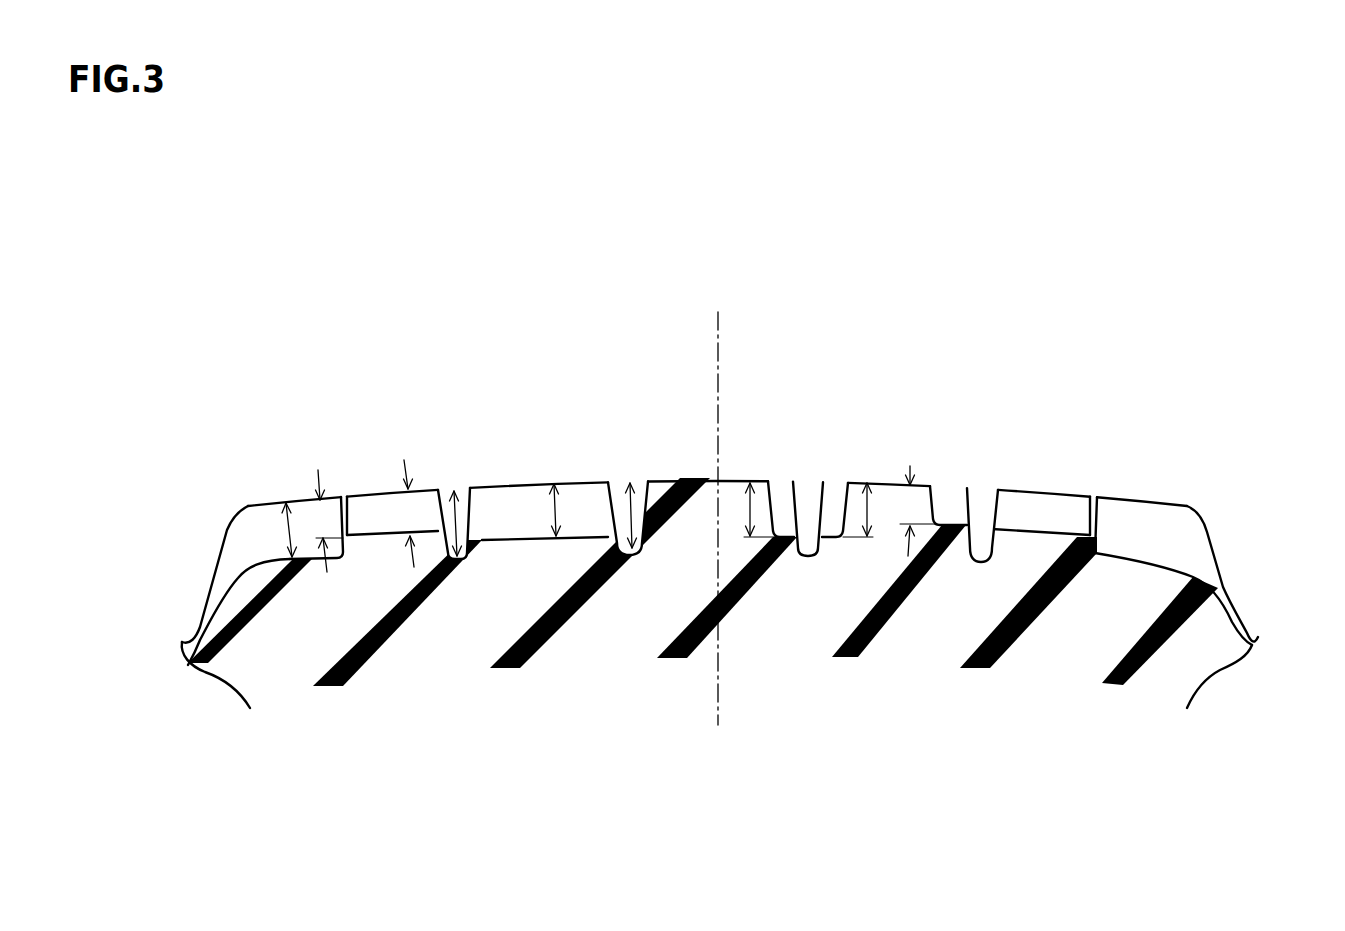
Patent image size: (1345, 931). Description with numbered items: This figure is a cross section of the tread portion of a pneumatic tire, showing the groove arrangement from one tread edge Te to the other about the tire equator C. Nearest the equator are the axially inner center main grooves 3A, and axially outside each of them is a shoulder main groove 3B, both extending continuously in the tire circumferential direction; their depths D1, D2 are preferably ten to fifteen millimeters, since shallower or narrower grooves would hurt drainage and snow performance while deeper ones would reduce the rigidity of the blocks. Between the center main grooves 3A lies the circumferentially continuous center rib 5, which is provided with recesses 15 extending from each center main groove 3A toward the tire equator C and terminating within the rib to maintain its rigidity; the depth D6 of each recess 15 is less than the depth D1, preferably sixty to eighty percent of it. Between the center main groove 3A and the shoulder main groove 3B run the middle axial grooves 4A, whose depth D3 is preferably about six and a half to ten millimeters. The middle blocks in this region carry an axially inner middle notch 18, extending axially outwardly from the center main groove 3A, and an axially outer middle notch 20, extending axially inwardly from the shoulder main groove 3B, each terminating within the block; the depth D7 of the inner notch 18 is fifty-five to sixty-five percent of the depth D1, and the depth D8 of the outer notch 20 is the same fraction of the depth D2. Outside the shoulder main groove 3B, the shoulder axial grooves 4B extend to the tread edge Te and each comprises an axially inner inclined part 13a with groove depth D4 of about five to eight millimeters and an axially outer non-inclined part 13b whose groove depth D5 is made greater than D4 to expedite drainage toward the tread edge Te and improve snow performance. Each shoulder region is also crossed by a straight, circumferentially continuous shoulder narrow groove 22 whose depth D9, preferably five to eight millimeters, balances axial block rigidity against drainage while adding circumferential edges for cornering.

The tread edge Te is at (247, 504).
The tire equator C is at (719, 502).
The shoulder narrow groove 22 is at (341, 497).
The middle axial groove 4A is at (503, 511).
The shoulder axial groove 4B is at (1125, 447).
The axially inner inclined part 13a is at (1038, 513).
The axially outer non-inclined part 13b is at (1153, 520).
The center rib 5 is at (679, 476).
The recess 15 is at (781, 492).
The center main groove 3A is at (808, 493).
The axially inner middle notch 18 is at (837, 497).
The axially outer middle notch 20 is at (948, 492).
The shoulder main groove 3B is at (977, 507).
The depth of center main groove D1 is at (629, 517).
The depth of shoulder main groove D2 is at (457, 505).
The depth of middle axial groove D3 is at (556, 510).
The groove depth of axially inner inclined part D4 is at (406, 508).
The groove depth of axially outer non-inclined part D5 is at (285, 525).
The depth of recess D6 is at (750, 505).
The depth of axially inner middle notch D7 is at (867, 507).
The depth of axially outer middle notch D8 is at (910, 492).
The depth of shoulder narrow groove D9 is at (320, 514).